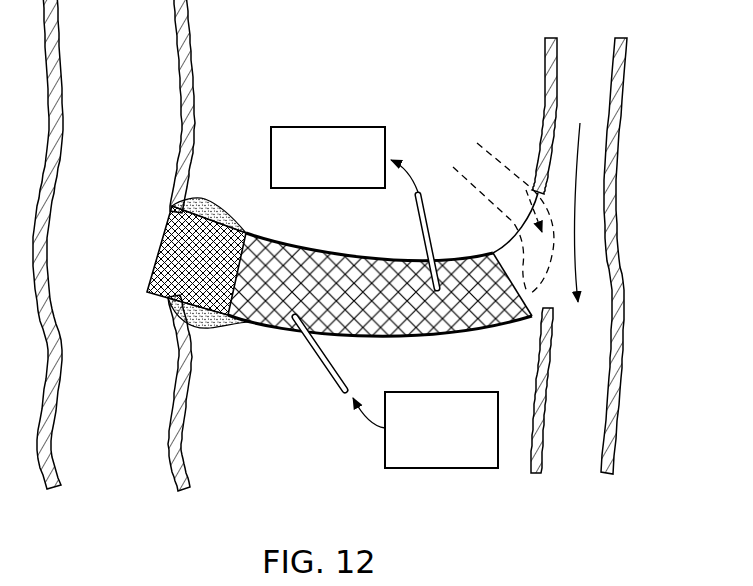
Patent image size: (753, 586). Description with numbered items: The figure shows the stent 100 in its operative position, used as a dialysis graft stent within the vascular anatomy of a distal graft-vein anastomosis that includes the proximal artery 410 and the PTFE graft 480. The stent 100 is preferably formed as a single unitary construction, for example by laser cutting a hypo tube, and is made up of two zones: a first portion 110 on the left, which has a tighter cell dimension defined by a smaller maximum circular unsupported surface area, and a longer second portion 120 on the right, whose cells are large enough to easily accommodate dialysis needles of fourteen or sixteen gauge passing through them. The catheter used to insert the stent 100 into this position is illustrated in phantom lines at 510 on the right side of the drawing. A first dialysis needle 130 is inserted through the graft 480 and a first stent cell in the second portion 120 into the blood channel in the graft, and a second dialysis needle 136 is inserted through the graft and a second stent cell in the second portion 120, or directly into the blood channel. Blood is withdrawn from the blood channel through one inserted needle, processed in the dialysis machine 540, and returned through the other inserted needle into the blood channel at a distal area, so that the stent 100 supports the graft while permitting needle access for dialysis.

The stent 100 is at (267, 253).
The first portion 110 is at (228, 327).
The second portion 120 is at (505, 321).
The first dialysis needle 130 is at (322, 372).
The second dialysis needle 136 is at (423, 242).
The proximal artery 410 is at (603, 58).
The graft 480 is at (518, 234).
The catheter 510 is at (490, 157).
The dialysis machine 540 is at (350, 127).